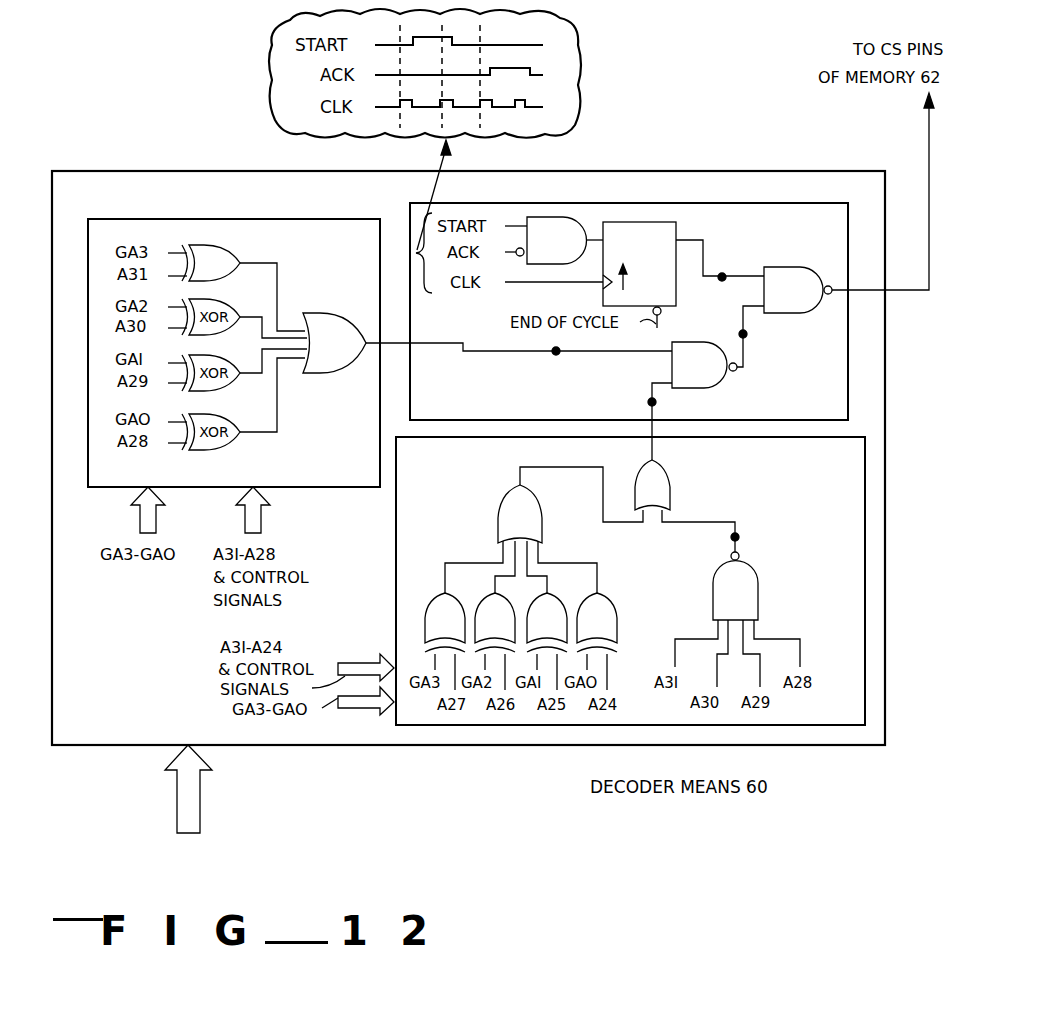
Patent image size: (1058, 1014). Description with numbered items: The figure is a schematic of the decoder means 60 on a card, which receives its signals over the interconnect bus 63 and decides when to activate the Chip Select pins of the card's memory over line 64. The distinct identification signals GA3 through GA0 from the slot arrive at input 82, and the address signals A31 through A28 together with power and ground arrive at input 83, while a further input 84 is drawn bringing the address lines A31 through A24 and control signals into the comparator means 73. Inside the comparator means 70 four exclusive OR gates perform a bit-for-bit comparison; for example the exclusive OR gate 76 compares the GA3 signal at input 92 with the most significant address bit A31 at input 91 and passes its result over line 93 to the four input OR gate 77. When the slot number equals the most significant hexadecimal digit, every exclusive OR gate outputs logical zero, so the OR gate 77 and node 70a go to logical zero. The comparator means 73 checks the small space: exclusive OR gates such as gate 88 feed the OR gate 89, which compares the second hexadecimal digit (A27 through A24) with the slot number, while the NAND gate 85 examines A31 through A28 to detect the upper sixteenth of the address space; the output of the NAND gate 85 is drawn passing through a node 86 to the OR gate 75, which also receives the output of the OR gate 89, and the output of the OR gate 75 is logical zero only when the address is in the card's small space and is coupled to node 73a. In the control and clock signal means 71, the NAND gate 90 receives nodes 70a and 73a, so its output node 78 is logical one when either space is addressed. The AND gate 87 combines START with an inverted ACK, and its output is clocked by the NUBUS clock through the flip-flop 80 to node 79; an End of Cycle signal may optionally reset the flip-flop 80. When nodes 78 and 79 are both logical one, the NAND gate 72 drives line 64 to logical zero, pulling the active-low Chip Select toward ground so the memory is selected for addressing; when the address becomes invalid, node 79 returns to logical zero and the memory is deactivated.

The decoder means 60 is at (345, 748).
The comparator means 70 is at (290, 219).
The node 70a is at (553, 354).
The control and clock signal means 71 is at (544, 203).
The NAND gate 72 is at (792, 314).
The comparator means 73 is at (395, 605).
The node 73a is at (656, 402).
The OR gate 75 is at (673, 488).
The exclusive OR gate 76 is at (222, 246).
The four input OR gate 77 is at (348, 368).
The node 78 is at (745, 338).
The node 79 is at (722, 272).
The flip-flop 80 is at (603, 296).
The input 82 is at (140, 520).
The input 83 is at (245, 520).
The A31-A24 and control signals input 84 is at (370, 658).
The NAND gate 85 is at (760, 574).
The connection node 86 is at (730, 538).
The AND gate 87 is at (570, 217).
The exclusive OR gate 88 is at (435, 601).
The OR gate 89 is at (505, 495).
The NAND gate 90 is at (727, 386).
The input 91 is at (172, 277).
The input 92 is at (172, 253).
The line 93 is at (280, 275).
The interconnect bus 63 is at (200, 818).
The line 64 is at (910, 291).